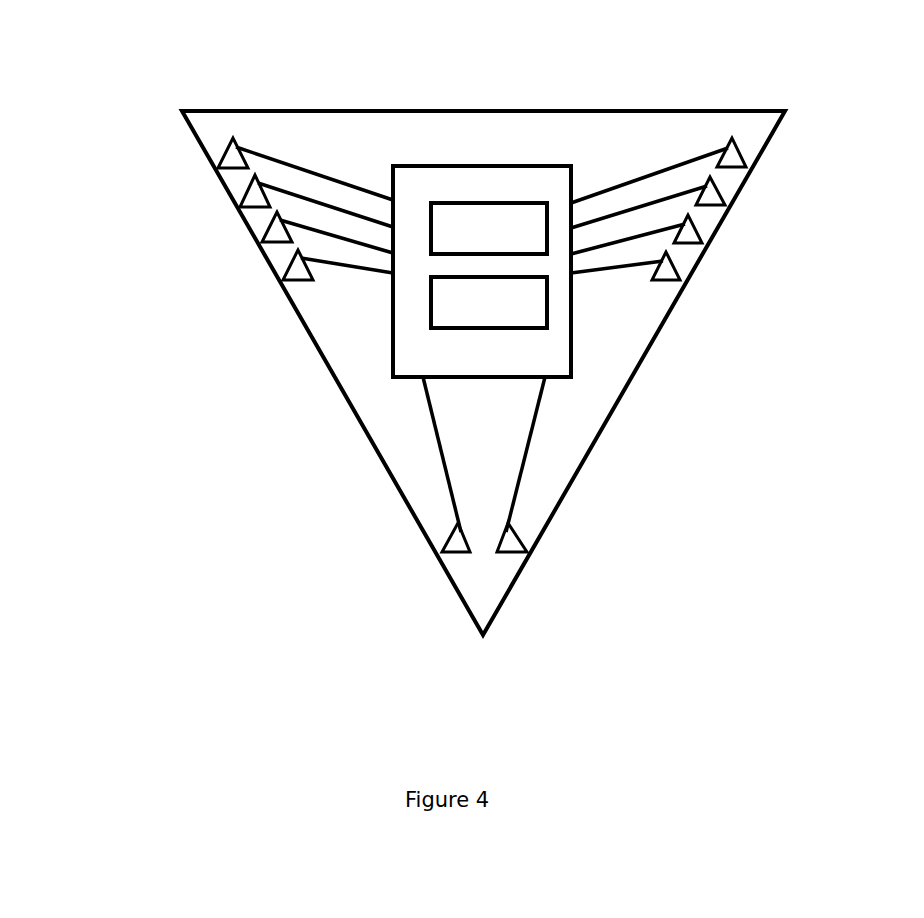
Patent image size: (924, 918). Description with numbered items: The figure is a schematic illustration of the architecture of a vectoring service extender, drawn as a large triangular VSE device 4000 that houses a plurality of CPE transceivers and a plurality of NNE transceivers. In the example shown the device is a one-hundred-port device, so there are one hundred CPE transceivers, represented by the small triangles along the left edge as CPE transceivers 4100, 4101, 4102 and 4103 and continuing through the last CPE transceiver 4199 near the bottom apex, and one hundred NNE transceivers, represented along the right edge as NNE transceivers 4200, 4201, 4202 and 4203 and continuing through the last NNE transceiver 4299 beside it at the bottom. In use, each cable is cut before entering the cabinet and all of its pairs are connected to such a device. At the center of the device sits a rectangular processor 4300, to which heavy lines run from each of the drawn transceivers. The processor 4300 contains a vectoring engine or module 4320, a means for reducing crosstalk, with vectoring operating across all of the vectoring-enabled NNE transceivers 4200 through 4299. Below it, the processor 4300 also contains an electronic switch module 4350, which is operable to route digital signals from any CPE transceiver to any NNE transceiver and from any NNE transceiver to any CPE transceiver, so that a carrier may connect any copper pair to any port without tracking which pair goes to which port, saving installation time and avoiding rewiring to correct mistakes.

The VSE device 4000 is at (443, 110).
The processor 4300 is at (518, 163).
The vectoring engine or module 4320 is at (550, 202).
The electronic switch module 4350 is at (553, 305).
The CPE transceiver 4100 is at (223, 153).
The CPE transceiver 4101 is at (247, 190).
The CPE transceiver 4102 is at (270, 228).
The CPE transceiver 4103 is at (287, 267).
The NNE transceiver 4200 is at (743, 153).
The NNE transceiver 4201 is at (720, 192).
The NNE transceiver 4202 is at (698, 228).
The NNE transceiver 4203 is at (677, 267).
The CPE transceiver 4199 is at (442, 537).
The NNE transceiver 4299 is at (523, 537).